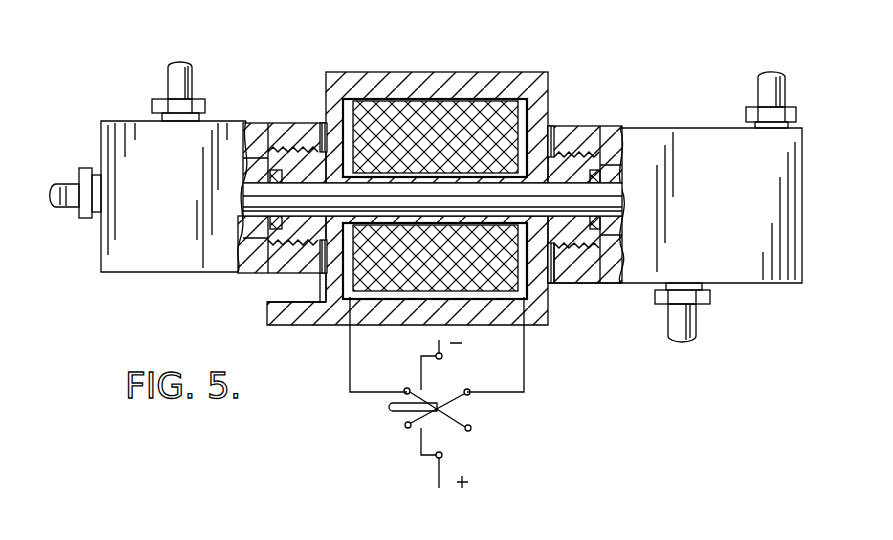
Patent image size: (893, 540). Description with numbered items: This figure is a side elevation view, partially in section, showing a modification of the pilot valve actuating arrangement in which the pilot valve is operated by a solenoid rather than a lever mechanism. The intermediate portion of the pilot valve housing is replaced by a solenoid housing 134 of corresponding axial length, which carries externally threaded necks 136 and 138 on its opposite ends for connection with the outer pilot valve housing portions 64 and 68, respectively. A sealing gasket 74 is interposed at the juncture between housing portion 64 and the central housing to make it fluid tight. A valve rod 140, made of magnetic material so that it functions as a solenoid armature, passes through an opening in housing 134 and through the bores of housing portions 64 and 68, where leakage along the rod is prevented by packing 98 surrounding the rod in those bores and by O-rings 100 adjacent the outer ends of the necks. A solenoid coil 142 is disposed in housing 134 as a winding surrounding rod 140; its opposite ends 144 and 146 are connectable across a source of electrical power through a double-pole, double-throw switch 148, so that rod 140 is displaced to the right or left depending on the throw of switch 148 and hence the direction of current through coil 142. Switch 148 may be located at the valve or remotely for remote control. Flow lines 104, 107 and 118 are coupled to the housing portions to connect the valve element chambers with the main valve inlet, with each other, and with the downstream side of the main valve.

The outer housing portion 64 is at (788, 258).
The outer housing portion 68 is at (125, 262).
The sealing gasket 74 is at (320, 288).
The packing 98 is at (258, 165).
The O-rings 100 is at (272, 170).
The flow line 104 is at (695, 317).
The flow line 107 is at (193, 78).
The flow line 118 is at (68, 210).
The solenoid housing 134 is at (388, 80).
The externally threaded neck 136 is at (567, 168).
The externally threaded neck 138 is at (303, 163).
The valve rod 140 is at (480, 193).
The solenoid coil 142 is at (435, 120).
The coil end 144 is at (525, 372).
The coil end 146 is at (348, 363).
The double-pole, double-throw switch 148 is at (472, 412).